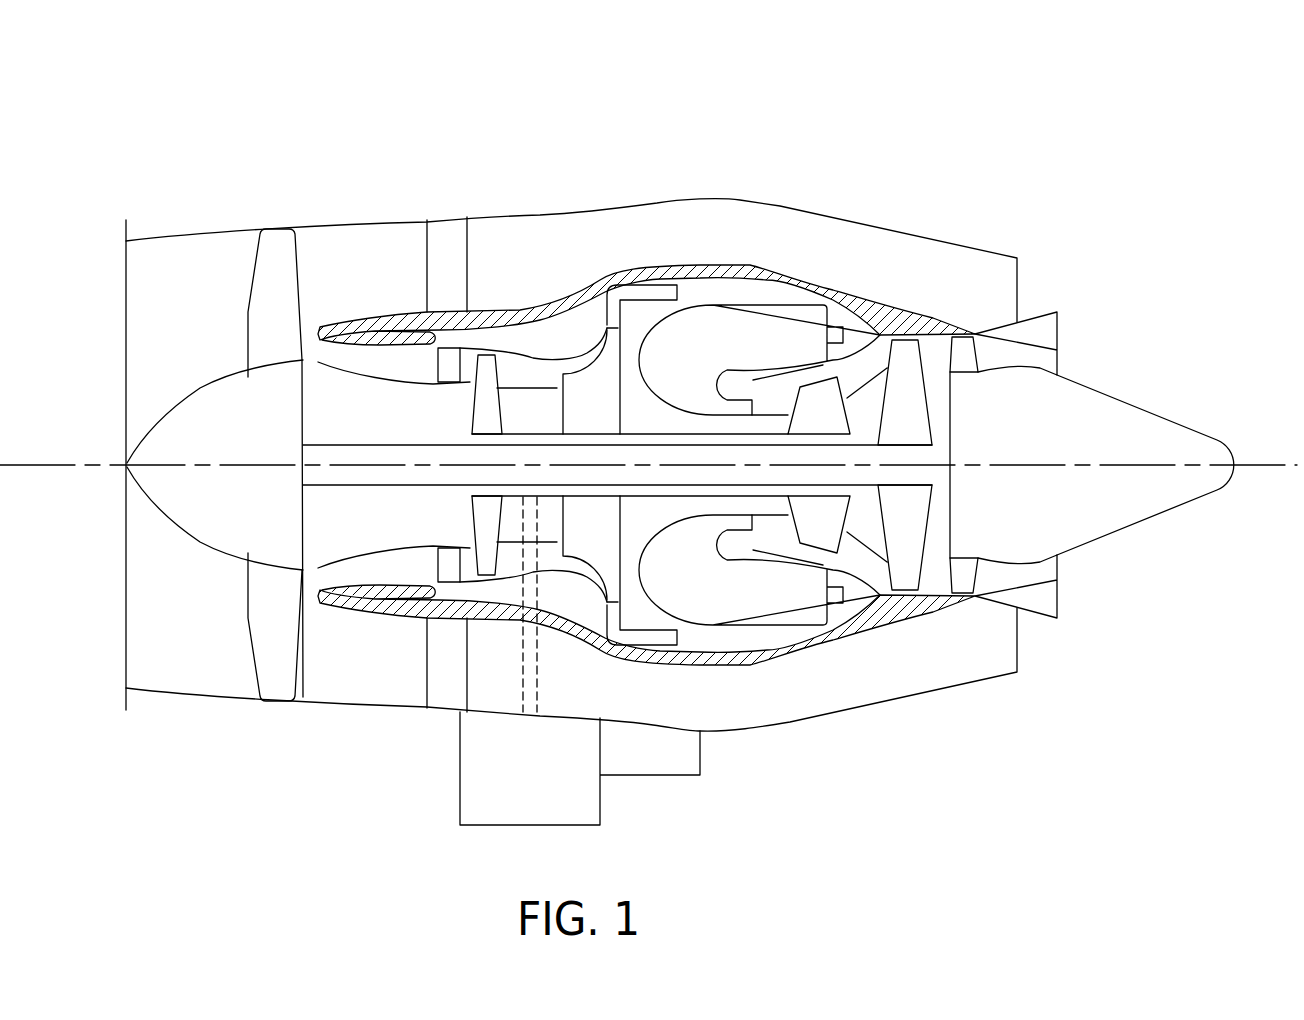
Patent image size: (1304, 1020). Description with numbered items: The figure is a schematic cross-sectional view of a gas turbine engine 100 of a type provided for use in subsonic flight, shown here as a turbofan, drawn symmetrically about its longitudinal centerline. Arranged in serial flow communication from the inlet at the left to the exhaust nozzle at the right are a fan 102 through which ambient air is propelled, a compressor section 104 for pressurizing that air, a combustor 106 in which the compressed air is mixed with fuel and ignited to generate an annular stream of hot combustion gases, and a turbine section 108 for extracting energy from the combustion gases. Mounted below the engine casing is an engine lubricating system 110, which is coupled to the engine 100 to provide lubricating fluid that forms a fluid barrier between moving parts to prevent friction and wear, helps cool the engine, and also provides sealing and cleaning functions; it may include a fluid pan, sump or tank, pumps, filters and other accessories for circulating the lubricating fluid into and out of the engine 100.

The gas turbine engine 100 is at (883, 153).
The fan 102 is at (272, 615).
The compressor section 104 is at (520, 367).
The combustor 106 is at (735, 327).
The turbine section 108 is at (863, 530).
The engine lubricating system 110 is at (635, 808).